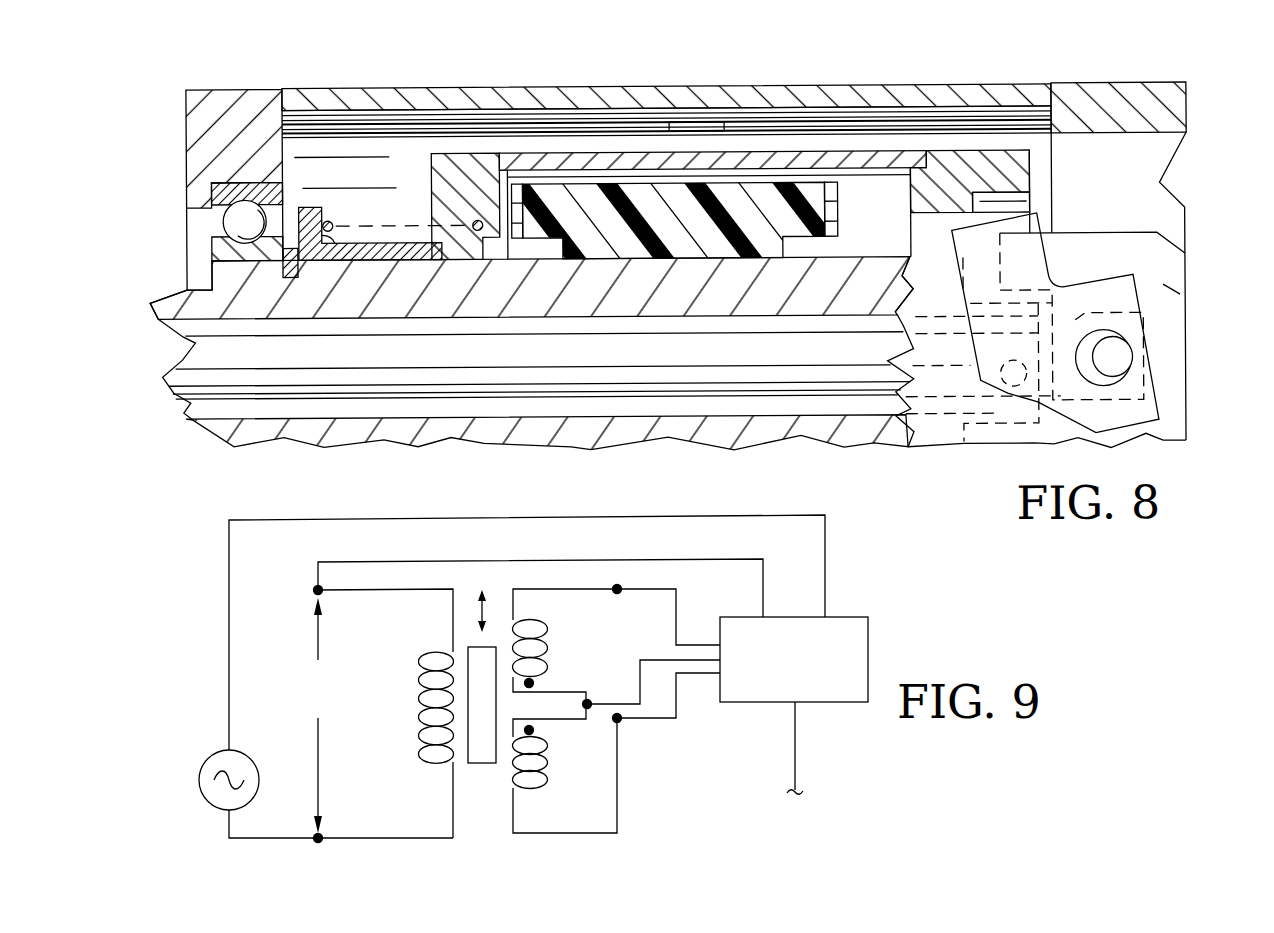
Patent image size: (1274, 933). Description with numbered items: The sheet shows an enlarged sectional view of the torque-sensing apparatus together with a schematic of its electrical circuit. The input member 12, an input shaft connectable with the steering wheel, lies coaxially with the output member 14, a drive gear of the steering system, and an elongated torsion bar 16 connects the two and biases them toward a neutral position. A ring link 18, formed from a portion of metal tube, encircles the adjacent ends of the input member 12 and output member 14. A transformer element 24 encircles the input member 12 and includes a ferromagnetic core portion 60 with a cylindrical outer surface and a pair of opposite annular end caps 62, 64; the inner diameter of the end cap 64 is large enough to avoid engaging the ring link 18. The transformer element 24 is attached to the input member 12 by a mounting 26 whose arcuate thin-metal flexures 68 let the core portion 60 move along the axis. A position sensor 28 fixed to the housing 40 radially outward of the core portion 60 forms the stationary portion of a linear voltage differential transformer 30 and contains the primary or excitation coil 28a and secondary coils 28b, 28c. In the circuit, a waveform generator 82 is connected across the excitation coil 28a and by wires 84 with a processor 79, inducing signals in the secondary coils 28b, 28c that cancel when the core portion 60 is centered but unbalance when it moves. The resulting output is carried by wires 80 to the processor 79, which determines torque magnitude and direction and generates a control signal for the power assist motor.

In FIG. 8, the input member 12 is at (370, 286).
In FIG. 8, the output member 14 is at (1140, 260).
In FIG. 8, the torsion bar 16 is at (370, 366).
In FIG. 8, the ring link 18 is at (1052, 216).
In FIG. 8, the transformer element 24 is at (612, 144).
In FIG. 8, the mounting 26 is at (701, 170).
In FIG. 8, the position sensor 28 is at (704, 98).
In FIG. 8, the excitation coil 28a is at (397, 116).
In FIG. 9, the excitation coil 28a is at (411, 725).
In FIG. 8, the secondary coil 28b is at (363, 126).
In FIG. 9, the secondary coil 28b is at (556, 633).
In FIG. 8, the secondary coil 28c is at (943, 129).
In FIG. 9, the secondary coil 28c is at (559, 762).
In FIG. 8, the linear voltage differential transformer 30 is at (1079, 152).
In FIG. 8, the housing 40 is at (837, 91).
In FIG. 8, the core portion 60 is at (575, 161).
In FIG. 9, the core portion 60 is at (487, 704).
In FIG. 8, the annular end cap 62 is at (463, 171).
In FIG. 8, the annular end cap 64 is at (962, 172).
In FIG. 8, the flexures 68 is at (545, 446).
In FIG. 9, the processor 79 is at (845, 628).
In FIG. 9, the wires 80 is at (677, 612).
In FIG. 9, the waveform generator 82 is at (213, 768).
In FIG. 9, the wires 84 is at (562, 517).